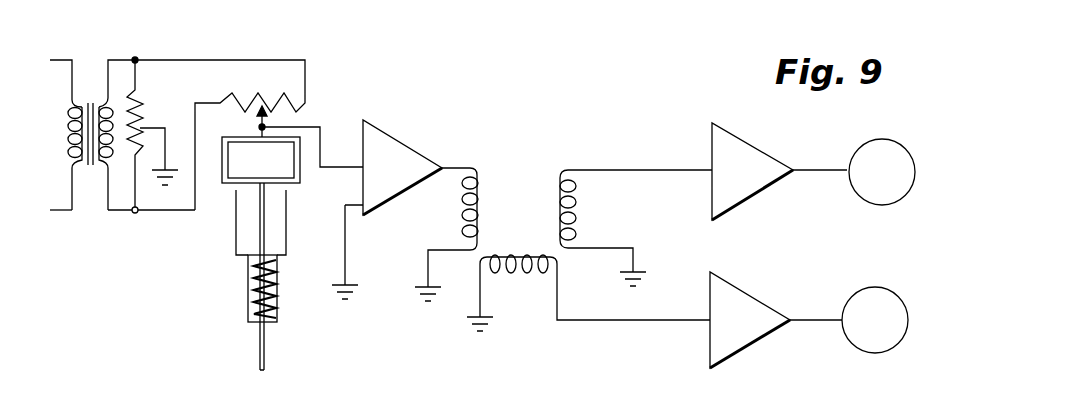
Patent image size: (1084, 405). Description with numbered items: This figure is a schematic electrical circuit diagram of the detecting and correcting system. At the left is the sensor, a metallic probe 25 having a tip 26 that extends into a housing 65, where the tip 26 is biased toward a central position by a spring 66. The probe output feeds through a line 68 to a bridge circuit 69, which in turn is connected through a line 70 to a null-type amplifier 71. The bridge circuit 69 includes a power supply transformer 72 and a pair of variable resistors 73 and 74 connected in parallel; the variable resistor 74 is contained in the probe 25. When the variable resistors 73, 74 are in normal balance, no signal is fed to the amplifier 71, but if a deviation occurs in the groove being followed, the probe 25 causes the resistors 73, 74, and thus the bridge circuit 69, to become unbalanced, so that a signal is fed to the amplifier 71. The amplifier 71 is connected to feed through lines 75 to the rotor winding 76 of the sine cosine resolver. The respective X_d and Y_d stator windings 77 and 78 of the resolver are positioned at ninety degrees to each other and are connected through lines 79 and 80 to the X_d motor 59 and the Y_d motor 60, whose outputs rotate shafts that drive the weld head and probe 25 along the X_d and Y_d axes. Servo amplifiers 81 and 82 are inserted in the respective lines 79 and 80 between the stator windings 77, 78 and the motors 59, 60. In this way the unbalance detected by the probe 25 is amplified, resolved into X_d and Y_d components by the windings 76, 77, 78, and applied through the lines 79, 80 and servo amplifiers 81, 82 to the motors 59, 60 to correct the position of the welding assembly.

The power supply transformer 72 is at (90, 82).
The variable resistor 73 is at (138, 100).
The variable resistor 74 is at (255, 100).
The line 68 is at (258, 125).
The line 70 is at (320, 120).
The null-type amplifier 71 is at (403, 140).
The lines 75 is at (450, 166).
The rotor winding 76 is at (478, 176).
The X_d stator winding 77 is at (560, 190).
The Y_d stator winding 78 is at (505, 257).
The servo amplifier 81 is at (712, 150).
The line 79 is at (812, 170).
The X_d motor 59 is at (885, 205).
The servo amplifier 82 is at (736, 290).
The line 80 is at (812, 320).
The Y_d motor 60 is at (868, 288).
The bridge circuit 69 is at (123, 232).
The housing 65 is at (240, 258).
The spring 66 is at (250, 313).
The tip 26 is at (260, 345).
The metallic probe 25 is at (296, 306).